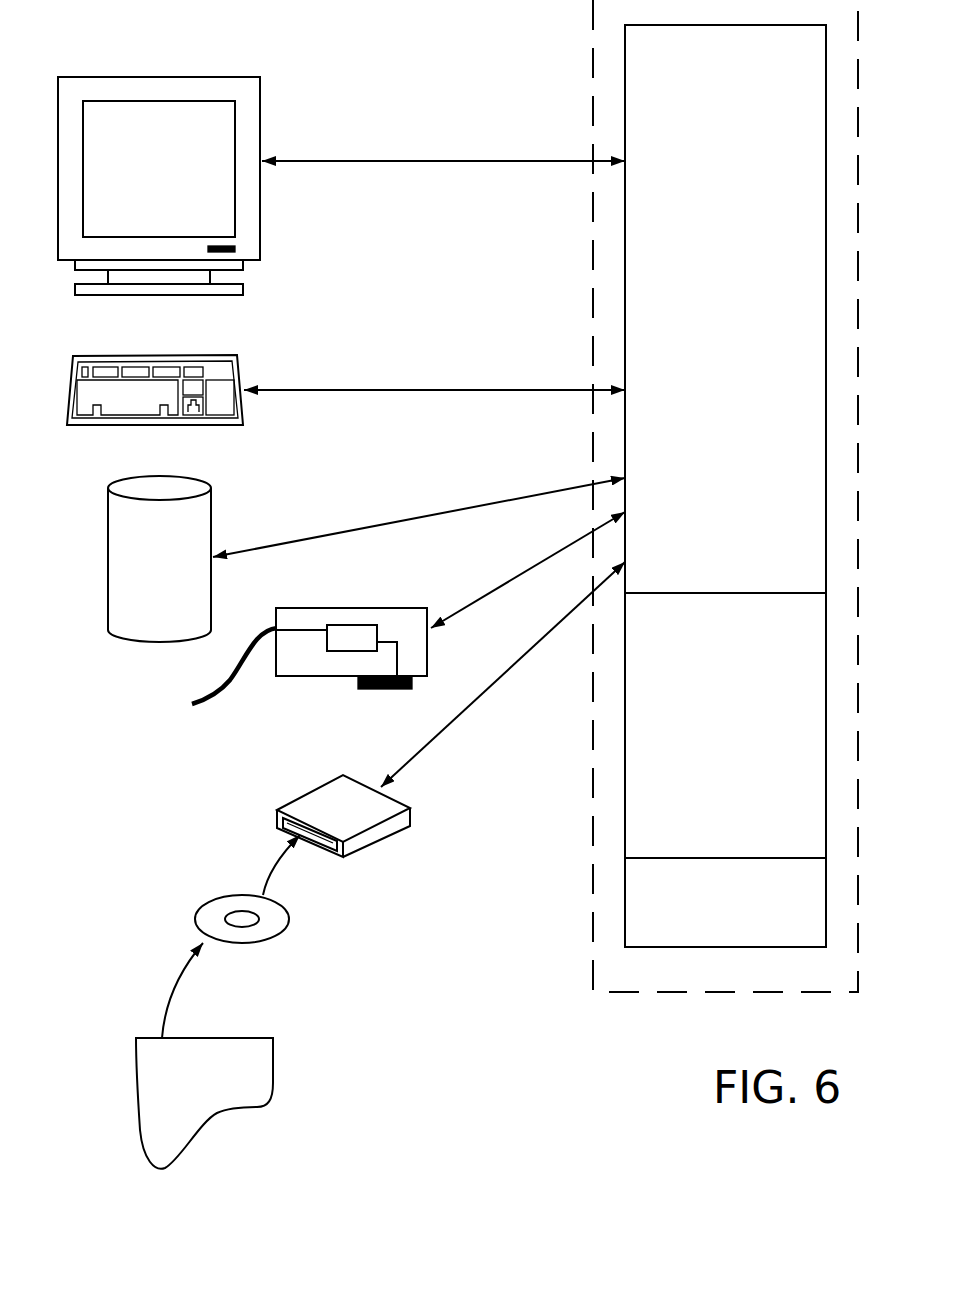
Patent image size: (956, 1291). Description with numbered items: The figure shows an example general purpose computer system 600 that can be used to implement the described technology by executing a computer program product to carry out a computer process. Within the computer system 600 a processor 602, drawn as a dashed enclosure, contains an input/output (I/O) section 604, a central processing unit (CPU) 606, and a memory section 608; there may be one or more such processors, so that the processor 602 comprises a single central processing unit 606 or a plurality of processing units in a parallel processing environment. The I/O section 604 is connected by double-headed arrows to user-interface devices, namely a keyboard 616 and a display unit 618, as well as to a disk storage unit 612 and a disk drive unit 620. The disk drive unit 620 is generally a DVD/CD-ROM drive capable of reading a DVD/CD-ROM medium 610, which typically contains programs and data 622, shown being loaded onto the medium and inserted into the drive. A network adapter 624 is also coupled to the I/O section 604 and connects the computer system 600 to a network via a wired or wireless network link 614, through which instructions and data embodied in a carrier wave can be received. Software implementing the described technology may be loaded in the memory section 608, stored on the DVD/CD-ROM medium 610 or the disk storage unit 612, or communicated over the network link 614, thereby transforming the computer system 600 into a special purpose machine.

The general purpose computer system 600 is at (558, 1095).
The processor 602 is at (593, 57).
The input/output (I/O) section 604 is at (725, 309).
The central processing unit (CPU) 606 is at (725, 725).
The memory section 608 is at (725, 902).
The DVD/CD-ROM medium 610 is at (210, 897).
The disk storage unit 612 is at (108, 508).
The network link 614 is at (207, 700).
The keyboard 616 is at (113, 357).
The display unit 618 is at (123, 77).
The disk drive unit 620 is at (326, 808).
The programs and data 622 is at (273, 1057).
The network adapter 624 is at (325, 680).